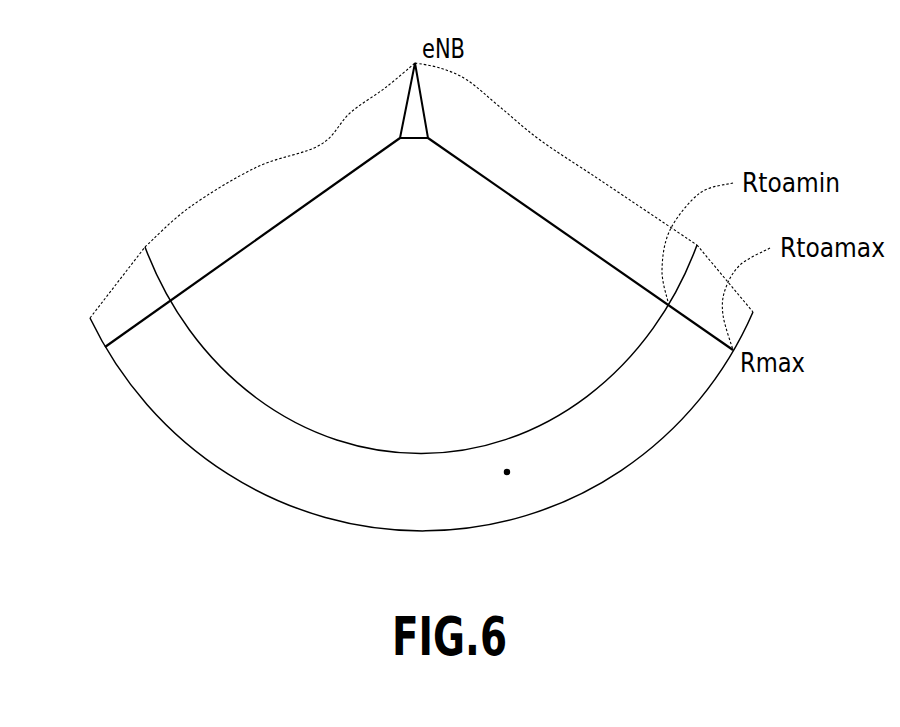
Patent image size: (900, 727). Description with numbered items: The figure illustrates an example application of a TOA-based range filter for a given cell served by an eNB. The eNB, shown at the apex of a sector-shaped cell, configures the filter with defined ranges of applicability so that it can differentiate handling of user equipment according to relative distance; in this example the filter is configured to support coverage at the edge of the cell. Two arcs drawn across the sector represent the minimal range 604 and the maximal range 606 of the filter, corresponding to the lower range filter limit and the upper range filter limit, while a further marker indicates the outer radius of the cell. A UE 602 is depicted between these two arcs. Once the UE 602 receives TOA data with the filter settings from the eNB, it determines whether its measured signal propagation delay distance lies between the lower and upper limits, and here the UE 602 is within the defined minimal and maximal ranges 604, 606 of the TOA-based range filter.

The UE 602 is at (505, 477).
The minimal range 604 is at (567, 410).
The maximal range 606 is at (657, 443).